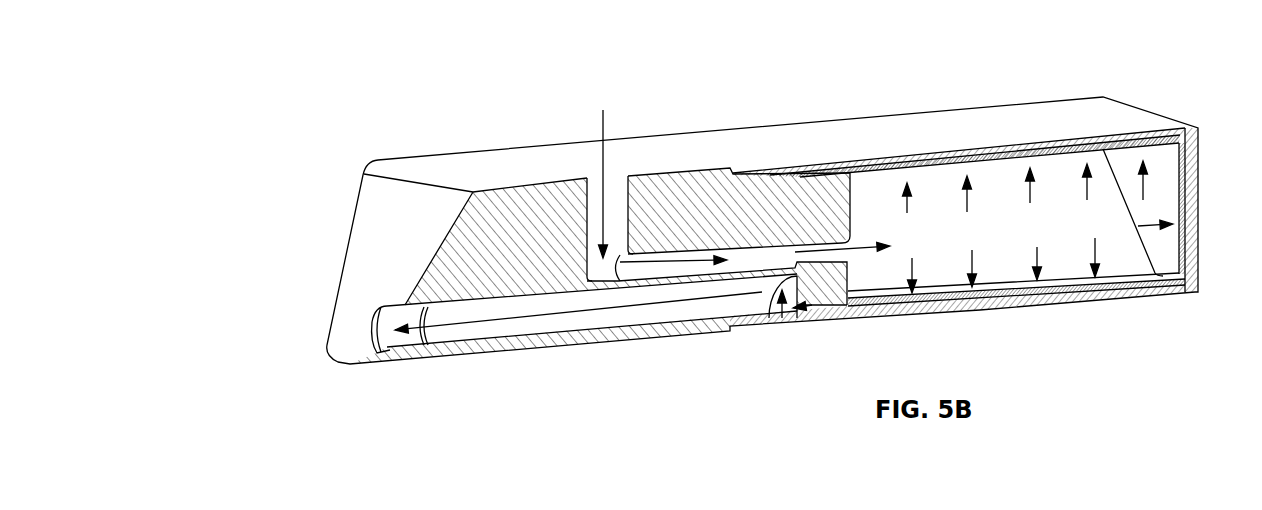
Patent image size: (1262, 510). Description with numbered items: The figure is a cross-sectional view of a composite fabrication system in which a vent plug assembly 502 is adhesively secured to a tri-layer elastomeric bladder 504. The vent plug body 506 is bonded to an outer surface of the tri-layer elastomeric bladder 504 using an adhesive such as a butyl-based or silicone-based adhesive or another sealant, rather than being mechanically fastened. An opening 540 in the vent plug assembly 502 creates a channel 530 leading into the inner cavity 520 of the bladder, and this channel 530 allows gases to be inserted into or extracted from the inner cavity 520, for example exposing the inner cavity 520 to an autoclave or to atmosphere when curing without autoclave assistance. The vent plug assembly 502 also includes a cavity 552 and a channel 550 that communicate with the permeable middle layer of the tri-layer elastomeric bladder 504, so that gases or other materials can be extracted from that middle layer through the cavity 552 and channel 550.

The vent plug assembly 502 is at (348, 204).
The tri-layer elastomeric bladder 504 is at (1134, 92).
The vent plug body 506 is at (453, 167).
The inner cavity 520 is at (1038, 238).
The channel 530 is at (612, 130).
The opening 540 is at (590, 177).
The channel 550 is at (368, 327).
The cavity 552 is at (813, 308).